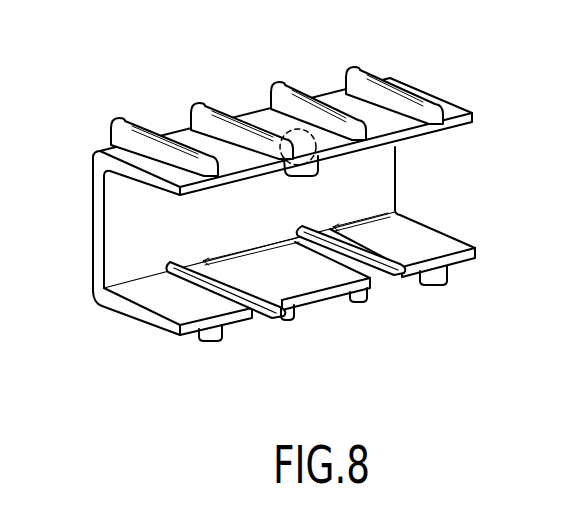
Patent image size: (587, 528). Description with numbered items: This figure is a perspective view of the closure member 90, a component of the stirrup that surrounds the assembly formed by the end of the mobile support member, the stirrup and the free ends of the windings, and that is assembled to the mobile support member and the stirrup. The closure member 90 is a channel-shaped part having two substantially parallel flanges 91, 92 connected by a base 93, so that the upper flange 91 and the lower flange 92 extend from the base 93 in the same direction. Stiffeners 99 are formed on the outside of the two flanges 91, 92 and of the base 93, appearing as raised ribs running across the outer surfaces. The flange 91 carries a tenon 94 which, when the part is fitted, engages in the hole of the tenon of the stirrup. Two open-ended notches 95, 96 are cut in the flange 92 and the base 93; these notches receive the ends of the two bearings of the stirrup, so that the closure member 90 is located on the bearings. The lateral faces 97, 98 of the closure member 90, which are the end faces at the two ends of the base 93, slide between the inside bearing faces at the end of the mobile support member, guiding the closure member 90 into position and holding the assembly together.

The closure member 90 is at (157, 105).
The flange 91 is at (386, 118).
The flange 92 is at (170, 307).
The base 93 is at (127, 213).
The tenon 94 is at (306, 164).
The open-ended notch 95 is at (377, 266).
The open-ended notch 96 is at (262, 312).
The lateral face 97 is at (398, 162).
The lateral face 98 is at (97, 258).
The stiffeners 99 is at (117, 133).